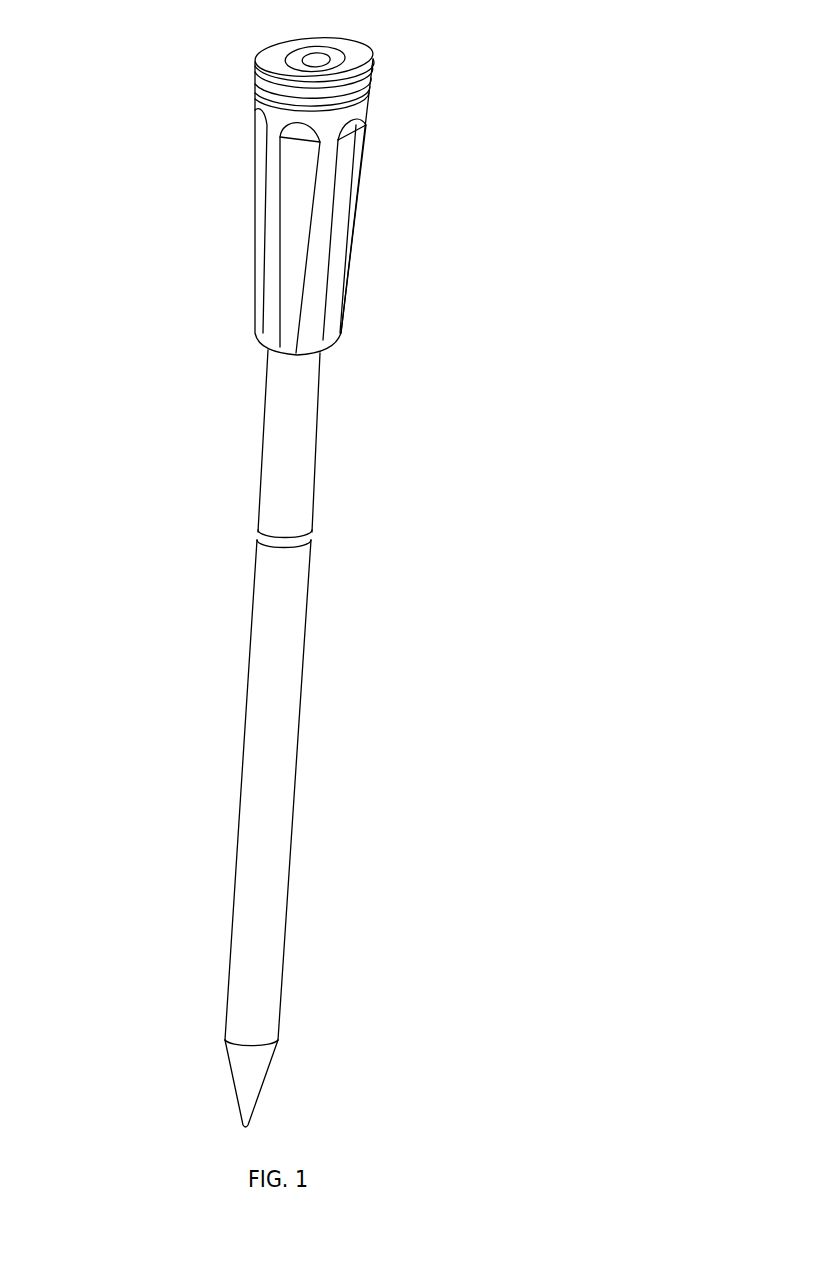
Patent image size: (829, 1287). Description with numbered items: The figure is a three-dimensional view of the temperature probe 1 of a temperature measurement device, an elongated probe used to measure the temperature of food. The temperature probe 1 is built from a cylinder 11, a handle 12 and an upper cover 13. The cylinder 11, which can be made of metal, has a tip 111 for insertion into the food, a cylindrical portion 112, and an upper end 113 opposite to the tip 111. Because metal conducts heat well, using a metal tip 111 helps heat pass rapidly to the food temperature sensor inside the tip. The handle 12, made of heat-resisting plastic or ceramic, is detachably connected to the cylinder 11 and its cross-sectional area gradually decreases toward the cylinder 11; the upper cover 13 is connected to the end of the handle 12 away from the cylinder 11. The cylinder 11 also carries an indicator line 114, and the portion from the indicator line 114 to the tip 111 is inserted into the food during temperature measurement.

The temperature probe 1 is at (418, 302).
The cylinder 11 is at (237, 633).
The handle 12 is at (282, 222).
The upper cover 13 is at (367, 57).
The tip 111 is at (260, 1077).
The cylindrical portion 112 is at (300, 652).
The upper end 113 is at (290, 377).
The indicator line 114 is at (298, 540).